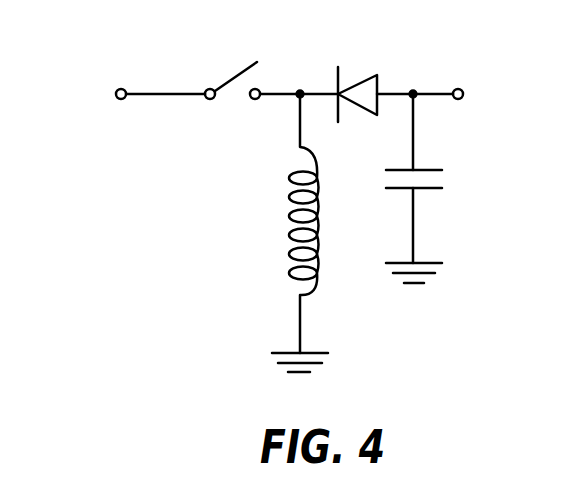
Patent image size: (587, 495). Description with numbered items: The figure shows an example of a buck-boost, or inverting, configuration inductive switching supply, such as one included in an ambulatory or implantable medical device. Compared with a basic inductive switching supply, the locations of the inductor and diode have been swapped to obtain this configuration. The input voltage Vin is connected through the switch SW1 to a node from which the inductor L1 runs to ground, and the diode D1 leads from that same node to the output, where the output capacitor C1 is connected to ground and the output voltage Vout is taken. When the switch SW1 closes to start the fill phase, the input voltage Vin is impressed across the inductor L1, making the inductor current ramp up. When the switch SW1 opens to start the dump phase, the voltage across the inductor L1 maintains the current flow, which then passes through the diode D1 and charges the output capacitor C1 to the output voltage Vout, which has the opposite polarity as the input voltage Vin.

The switch SW1 is at (271, 56).
The diode D1 is at (395, 67).
The inductor L1 is at (290, 233).
The output capacitor C1 is at (432, 188).
The input voltage Vin is at (134, 87).
The output voltage Vout is at (489, 87).